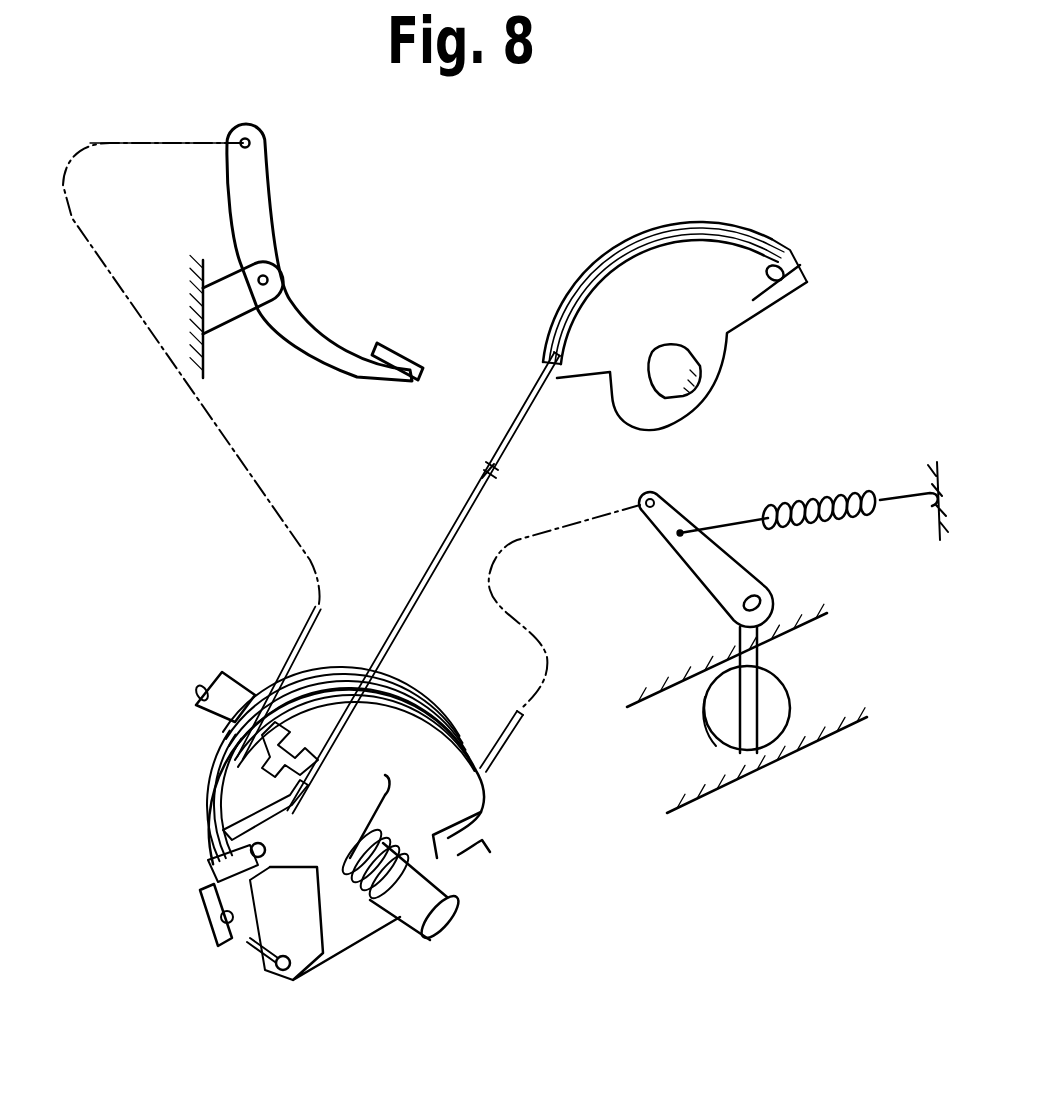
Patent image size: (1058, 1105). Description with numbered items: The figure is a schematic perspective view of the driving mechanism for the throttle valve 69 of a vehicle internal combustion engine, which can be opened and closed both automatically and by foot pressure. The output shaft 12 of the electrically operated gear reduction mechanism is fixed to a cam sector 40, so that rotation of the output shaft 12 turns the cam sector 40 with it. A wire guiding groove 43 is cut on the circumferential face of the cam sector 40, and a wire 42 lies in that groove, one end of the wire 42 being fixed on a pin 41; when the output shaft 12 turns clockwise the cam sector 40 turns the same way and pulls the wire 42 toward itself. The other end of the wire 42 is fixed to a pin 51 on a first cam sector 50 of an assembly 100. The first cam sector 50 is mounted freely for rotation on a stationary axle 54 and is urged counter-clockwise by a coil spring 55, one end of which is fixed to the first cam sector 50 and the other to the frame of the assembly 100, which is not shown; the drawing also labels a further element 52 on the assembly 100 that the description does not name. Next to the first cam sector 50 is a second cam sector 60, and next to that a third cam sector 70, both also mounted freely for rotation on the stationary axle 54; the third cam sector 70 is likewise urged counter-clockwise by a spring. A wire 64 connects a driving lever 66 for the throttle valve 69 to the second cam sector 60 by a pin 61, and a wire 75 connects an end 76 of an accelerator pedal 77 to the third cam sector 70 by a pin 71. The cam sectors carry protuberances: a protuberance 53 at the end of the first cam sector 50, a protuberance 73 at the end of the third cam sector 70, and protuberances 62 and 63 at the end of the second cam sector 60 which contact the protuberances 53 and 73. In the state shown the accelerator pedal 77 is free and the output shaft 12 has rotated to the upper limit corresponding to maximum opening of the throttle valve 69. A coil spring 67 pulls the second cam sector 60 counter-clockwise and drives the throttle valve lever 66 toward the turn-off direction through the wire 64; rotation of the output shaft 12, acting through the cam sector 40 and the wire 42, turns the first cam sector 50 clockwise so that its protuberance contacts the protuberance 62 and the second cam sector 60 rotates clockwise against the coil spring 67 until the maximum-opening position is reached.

The output shaft 12 is at (682, 358).
The cam sector 40 is at (752, 300).
The pin 41 is at (783, 281).
The wire 42 is at (515, 430).
The wire guiding groove 43 is at (583, 280).
The first cam sector 50 is at (483, 796).
The pin 51 is at (258, 858).
The coil spring 52 is at (390, 705).
The protuberance 53 is at (234, 800).
The stationary axle 54 is at (418, 926).
The coil spring 55 is at (357, 872).
The second cam sector 60 is at (333, 950).
The pin 61 is at (288, 972).
The protuberance 62 is at (282, 760).
The protuberance 63 is at (280, 742).
The wire 64 is at (510, 737).
The driving lever 66 is at (700, 570).
The coil spring 67 is at (821, 496).
The throttle valve 69 is at (782, 698).
The third cam sector 70 is at (192, 852).
The pin 71 is at (212, 924).
The protuberance 73 is at (212, 878).
The wire 75 is at (132, 148).
The end of accelerator pedal 76 is at (262, 197).
The accelerator pedal 77 is at (409, 346).
The assembly 100 is at (468, 716).